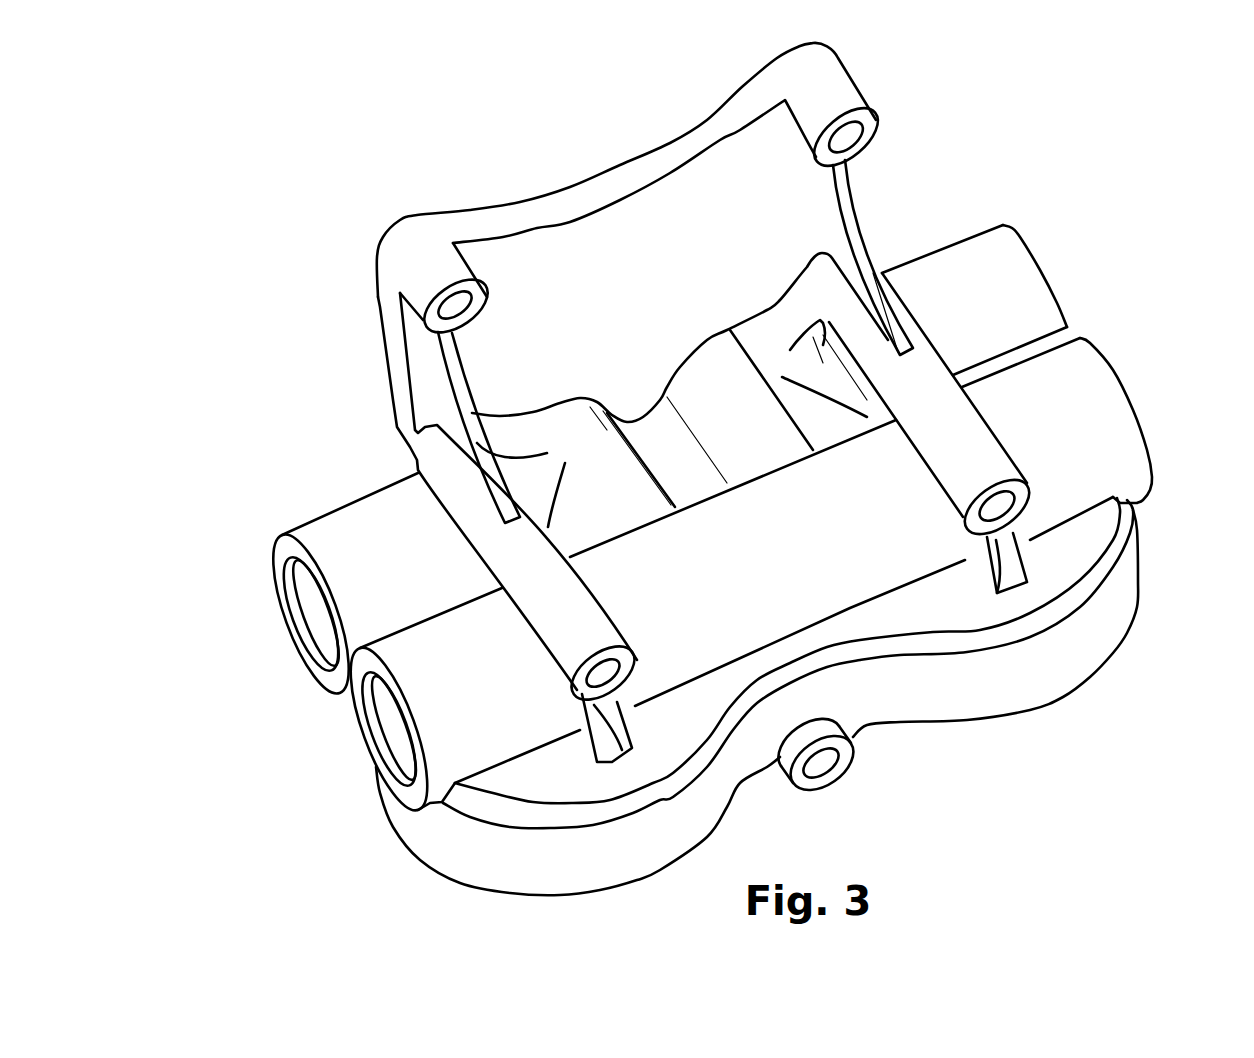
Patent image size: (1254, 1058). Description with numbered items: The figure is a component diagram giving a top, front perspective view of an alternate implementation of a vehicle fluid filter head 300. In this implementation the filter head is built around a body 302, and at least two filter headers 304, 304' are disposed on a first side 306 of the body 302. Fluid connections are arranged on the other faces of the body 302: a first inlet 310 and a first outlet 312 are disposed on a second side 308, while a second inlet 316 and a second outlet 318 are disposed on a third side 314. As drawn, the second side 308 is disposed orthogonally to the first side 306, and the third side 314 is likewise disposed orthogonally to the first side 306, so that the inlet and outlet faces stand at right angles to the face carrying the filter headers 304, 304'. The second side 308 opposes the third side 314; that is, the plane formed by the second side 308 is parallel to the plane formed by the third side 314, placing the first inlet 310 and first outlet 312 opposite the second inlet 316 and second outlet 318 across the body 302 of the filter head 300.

The vehicle fluid filter head 300 is at (257, 207).
The body 302 is at (363, 511).
The filter header 304 is at (754, 731).
The filter header 304' is at (1025, 631).
The first side 306 is at (895, 758).
The second side 308 is at (267, 710).
The first inlet 310 is at (294, 625).
The first outlet 312 is at (373, 740).
The third side 314 is at (1168, 304).
The second inlet 316 is at (1077, 264).
The second outlet 318 is at (1161, 403).